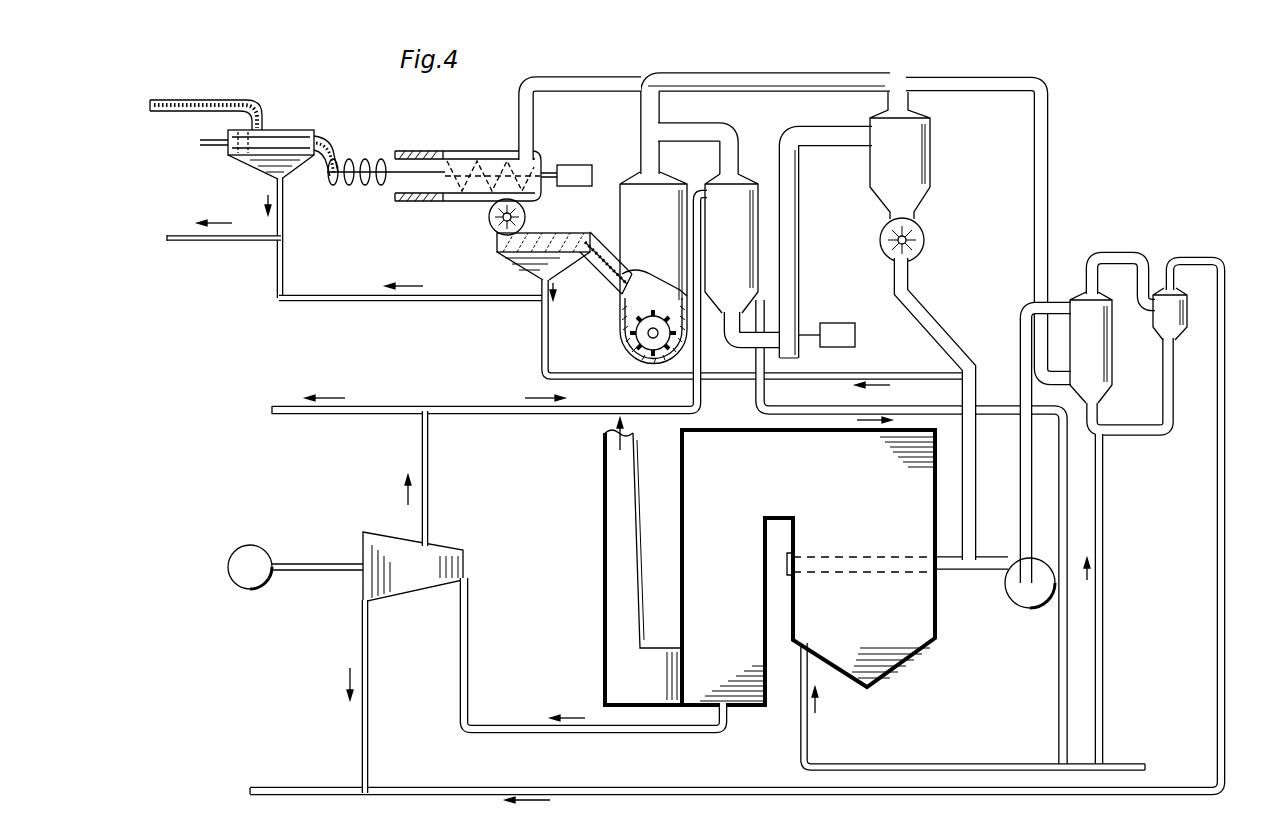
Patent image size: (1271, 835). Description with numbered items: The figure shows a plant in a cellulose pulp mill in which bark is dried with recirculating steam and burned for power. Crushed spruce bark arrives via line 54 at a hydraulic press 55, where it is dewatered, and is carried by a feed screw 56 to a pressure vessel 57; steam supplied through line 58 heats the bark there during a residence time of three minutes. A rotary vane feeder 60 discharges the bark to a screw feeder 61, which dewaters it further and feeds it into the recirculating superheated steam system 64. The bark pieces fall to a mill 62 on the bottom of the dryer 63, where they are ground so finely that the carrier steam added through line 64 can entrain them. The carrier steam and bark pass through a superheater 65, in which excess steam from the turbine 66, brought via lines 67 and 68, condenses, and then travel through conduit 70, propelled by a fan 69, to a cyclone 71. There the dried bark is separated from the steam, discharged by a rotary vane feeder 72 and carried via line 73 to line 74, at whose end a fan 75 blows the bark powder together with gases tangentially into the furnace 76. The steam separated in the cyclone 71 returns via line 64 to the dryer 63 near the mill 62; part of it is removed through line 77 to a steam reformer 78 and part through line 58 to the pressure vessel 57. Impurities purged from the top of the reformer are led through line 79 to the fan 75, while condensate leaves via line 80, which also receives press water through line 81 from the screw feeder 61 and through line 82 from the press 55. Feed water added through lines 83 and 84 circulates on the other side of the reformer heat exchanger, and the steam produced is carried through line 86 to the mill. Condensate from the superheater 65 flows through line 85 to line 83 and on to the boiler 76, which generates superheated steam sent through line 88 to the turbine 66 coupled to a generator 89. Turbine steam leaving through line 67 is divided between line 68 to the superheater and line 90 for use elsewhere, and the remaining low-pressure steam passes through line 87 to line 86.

The line 54 is at (163, 113).
The hydraulic press 55 is at (283, 130).
The feed screw 56 is at (398, 160).
The pressure vessel 57 is at (481, 152).
The line 58 is at (560, 78).
The rotary vane feeder 60 is at (526, 217).
The screw feeder 61 is at (569, 235).
The mill 62 is at (640, 343).
The dryer 63 is at (620, 316).
The recirculating superheated steam system / recirculation conduit 64 is at (752, 74).
The superheater 65 is at (746, 170).
The turbine 66 is at (448, 548).
The line 67 is at (430, 448).
The line 68 is at (517, 386).
The fan 69 is at (800, 354).
The conduit 70 is at (801, 232).
The cyclone 71 is at (932, 162).
The rotary vane feeder 72 is at (925, 250).
The line 73 is at (950, 345).
The line 74 is at (948, 571).
The fan 75 is at (1022, 604).
The furnace 76 is at (905, 662).
The line 77 is at (947, 78).
The steam reformer 78 is at (1125, 256).
The line 79 is at (1021, 470).
The line 80 is at (200, 212).
The line 81 is at (540, 290).
The line 82 is at (284, 232).
The line 83 is at (926, 767).
The line 84 is at (1104, 617).
The line 85 is at (1060, 684).
The line 86 is at (1226, 504).
The line 87 is at (370, 730).
The line 88 is at (520, 732).
The generator 89 is at (242, 588).
The line 90 is at (274, 408).